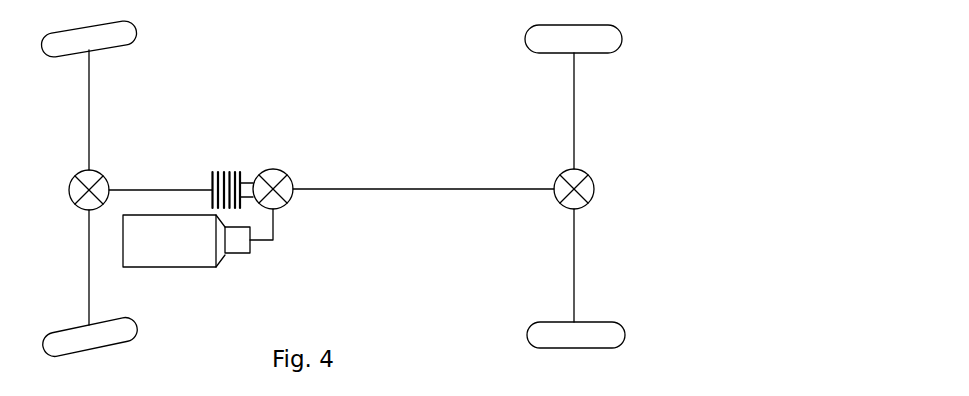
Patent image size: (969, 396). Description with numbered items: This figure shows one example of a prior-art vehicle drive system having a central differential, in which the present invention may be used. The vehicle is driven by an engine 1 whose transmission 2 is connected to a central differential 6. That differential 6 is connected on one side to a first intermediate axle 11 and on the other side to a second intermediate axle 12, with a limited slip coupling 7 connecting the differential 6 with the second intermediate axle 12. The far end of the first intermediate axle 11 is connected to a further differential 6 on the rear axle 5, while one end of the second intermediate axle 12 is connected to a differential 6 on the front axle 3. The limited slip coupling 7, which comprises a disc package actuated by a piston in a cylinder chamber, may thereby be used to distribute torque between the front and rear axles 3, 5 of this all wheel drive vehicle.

The engine 1 is at (167, 250).
The transmission 2 is at (240, 250).
The front axle 3 is at (89, 108).
The rear axle 5 is at (573, 100).
The differential 6 is at (103, 188).
The limited slip coupling 7 is at (223, 171).
The first intermediate axle 11 is at (407, 188).
The second intermediate axle 12 is at (170, 190).